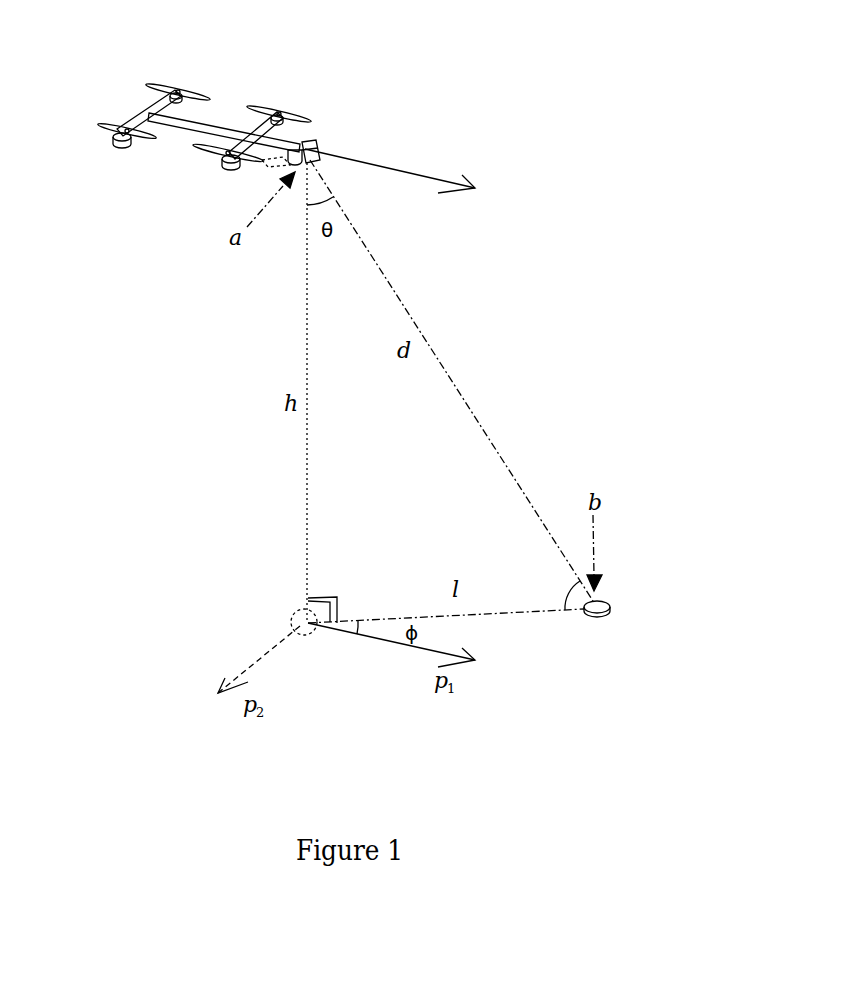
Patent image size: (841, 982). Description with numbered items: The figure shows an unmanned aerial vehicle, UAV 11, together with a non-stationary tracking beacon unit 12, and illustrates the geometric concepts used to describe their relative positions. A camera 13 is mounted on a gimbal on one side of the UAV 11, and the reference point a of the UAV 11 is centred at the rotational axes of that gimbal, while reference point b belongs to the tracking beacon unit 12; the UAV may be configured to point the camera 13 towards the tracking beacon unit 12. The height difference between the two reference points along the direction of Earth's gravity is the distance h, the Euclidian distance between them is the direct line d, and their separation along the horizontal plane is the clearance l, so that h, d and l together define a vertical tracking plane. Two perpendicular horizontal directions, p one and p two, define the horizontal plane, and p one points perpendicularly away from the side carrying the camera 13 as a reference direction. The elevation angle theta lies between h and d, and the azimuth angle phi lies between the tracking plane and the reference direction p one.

The UAV 11 is at (145, 113).
The tracking beacon unit 12 is at (611, 603).
The camera 13 is at (318, 142).